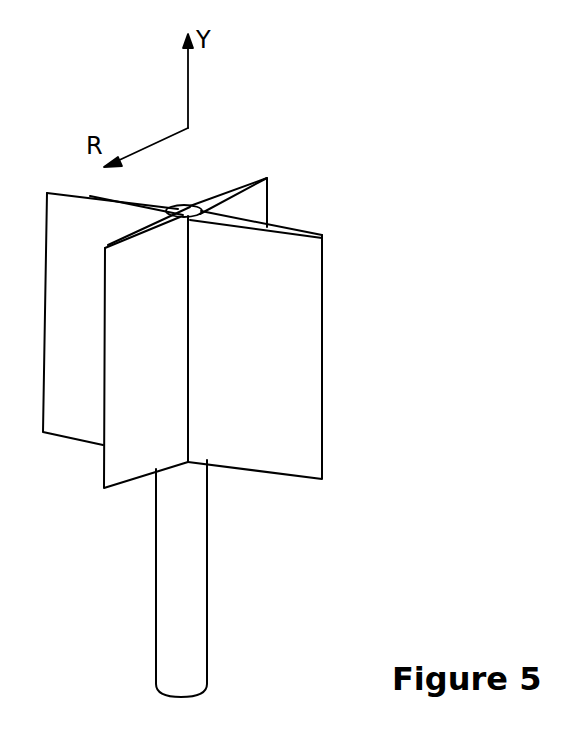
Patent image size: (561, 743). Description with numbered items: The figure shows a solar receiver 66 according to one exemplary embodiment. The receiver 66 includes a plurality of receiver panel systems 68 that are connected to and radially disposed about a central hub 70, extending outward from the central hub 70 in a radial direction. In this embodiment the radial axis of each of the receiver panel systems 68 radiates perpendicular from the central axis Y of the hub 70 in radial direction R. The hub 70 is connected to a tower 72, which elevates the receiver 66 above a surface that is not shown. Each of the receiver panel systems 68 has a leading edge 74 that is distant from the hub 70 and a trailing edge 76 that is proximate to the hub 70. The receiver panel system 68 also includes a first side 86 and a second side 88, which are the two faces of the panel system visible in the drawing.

The receiver 66 is at (338, 127).
The receiver panel systems 68 is at (340, 276).
The central hub 70 is at (190, 205).
The tower 72 is at (208, 622).
The leading edge 74 is at (322, 440).
The trailing edge 76 is at (173, 204).
The first side 86 is at (298, 390).
The second side 88 is at (301, 226).